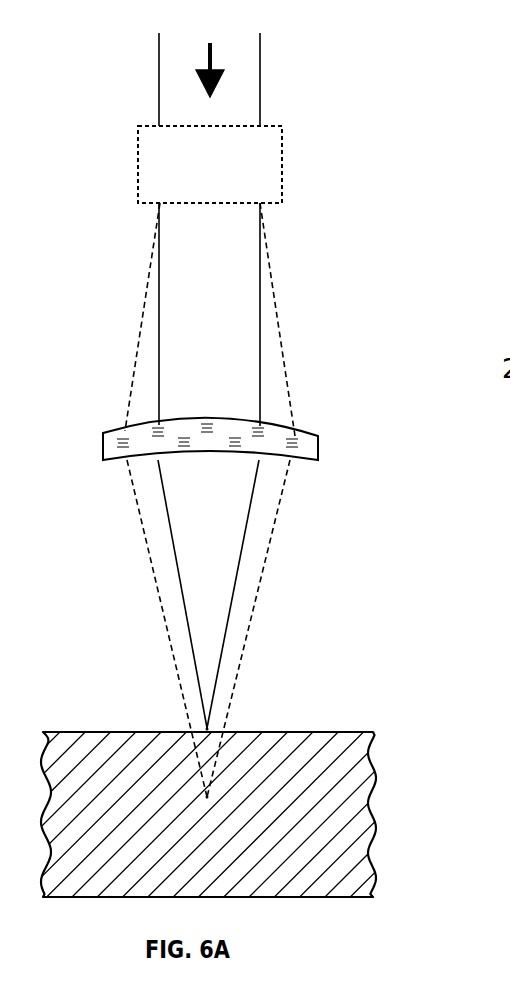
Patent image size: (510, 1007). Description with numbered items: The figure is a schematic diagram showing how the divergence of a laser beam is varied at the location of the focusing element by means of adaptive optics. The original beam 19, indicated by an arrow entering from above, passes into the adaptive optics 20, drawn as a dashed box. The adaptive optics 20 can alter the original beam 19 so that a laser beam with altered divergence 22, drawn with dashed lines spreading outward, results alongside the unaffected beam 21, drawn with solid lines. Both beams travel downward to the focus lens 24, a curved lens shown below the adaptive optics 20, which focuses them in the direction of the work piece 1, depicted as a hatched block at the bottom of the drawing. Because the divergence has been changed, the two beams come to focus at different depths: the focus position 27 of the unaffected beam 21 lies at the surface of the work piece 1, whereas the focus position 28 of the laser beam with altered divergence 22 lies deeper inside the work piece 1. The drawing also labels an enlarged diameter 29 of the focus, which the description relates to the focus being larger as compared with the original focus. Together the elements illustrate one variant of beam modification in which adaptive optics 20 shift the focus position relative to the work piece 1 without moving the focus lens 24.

The original beam 19 is at (212, 53).
The adaptive optics 20 is at (243, 170).
The unaffected beam 21 is at (260, 315).
The laser beam with altered divergence 22 is at (285, 370).
The focus lens 24 is at (318, 445).
The focus position of the unaffected beam 27 is at (212, 728).
The focus position of the laser beam with altered divergence 28 is at (207, 797).
The enlarged diameter 29 is at (490, 794).
The work piece 1 is at (317, 867).